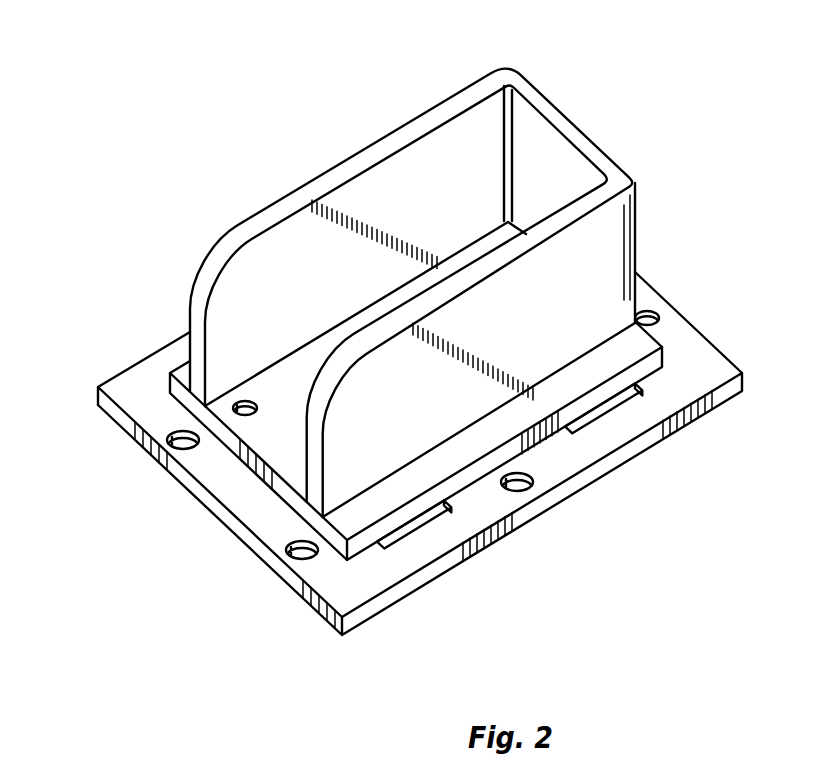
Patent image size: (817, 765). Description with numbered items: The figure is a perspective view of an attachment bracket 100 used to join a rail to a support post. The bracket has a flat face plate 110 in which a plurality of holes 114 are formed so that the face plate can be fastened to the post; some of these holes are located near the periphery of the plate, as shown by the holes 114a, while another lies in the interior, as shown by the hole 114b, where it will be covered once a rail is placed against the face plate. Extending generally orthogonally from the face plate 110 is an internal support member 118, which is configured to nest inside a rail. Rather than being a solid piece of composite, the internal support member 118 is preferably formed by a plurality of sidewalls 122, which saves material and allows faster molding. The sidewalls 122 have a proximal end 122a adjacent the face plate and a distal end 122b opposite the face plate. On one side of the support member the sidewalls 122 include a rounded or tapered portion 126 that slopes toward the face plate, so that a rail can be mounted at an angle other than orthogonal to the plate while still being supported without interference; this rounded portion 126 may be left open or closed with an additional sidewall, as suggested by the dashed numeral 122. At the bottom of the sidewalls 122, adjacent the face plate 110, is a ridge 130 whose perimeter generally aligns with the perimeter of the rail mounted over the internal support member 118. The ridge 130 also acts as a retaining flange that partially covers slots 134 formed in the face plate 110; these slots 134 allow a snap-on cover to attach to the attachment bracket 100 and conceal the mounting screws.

The attachment bracket 100 is at (214, 159).
The face plate 110 is at (693, 387).
The holes 114 is at (650, 312).
The holes adjacent the periphery 114a is at (181, 448).
The interior holes 114b is at (240, 416).
The internal support member 118 is at (617, 212).
The sidewalls 122 is at (449, 275).
The proximal end 122a is at (600, 351).
The distal end 122b is at (415, 114).
The rounded or tapered portion 126 is at (230, 243).
The ridge 130 is at (452, 490).
The slots 134 is at (597, 415).